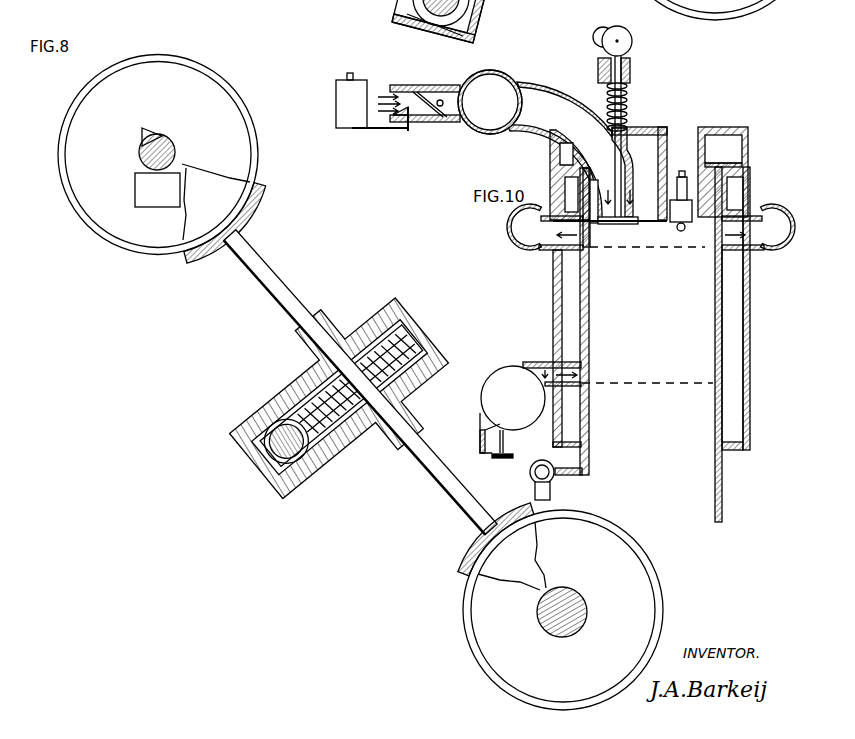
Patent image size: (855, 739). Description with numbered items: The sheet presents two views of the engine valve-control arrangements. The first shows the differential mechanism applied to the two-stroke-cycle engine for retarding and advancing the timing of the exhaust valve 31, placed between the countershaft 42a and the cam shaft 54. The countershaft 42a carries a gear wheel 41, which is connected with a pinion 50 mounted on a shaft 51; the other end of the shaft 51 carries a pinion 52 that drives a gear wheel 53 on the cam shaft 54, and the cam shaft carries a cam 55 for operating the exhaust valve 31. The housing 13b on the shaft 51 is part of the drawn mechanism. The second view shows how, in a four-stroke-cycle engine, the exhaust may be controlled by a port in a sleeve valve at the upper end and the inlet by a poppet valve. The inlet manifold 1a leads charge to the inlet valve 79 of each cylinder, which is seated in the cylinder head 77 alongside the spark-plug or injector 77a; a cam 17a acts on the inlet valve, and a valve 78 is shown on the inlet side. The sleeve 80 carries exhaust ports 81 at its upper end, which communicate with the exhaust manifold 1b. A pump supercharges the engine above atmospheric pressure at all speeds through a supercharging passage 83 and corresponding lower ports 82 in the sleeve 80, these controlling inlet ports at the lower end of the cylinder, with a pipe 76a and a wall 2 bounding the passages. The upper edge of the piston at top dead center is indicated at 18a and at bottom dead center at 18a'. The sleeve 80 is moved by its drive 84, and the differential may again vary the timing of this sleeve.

In FIG. 8, the gear wheel 53 is at (252, 118).
In FIG. 8, the cam 55 is at (131, 143).
In FIG. 8, the cam shaft 54 is at (184, 156).
In FIG. 8, the exhaust valve 31 is at (134, 190).
In FIG. 8, the pinion 52 is at (246, 220).
In FIG. 8, the shaft 51 is at (288, 275).
In FIG. 8, the spring housing 13b is at (347, 397).
In FIG. 10, the spring housing 13b is at (477, 40).
In FIG. 8, the pinion 50 is at (469, 554).
In FIG. 8, the gear wheel 41 is at (612, 528).
In FIG. 8, the countershaft 42a is at (596, 610).
In FIG. 10, the inlet valve 78 is at (414, 130).
In FIG. 10, the inlet manifold 1a is at (535, 145).
In FIG. 10, the inlet valve 79 is at (595, 56).
In FIG. 10, the cam 17a is at (634, 47).
In FIG. 10, the cylinder head 77 is at (729, 125).
In FIG. 10, the spark-plug or injector 77a is at (690, 179).
In FIG. 10, the exhaust ports 81 is at (740, 177).
In FIG. 10, the exhaust manifold 1b is at (651, 227).
In FIG. 10, the upper edge of piston in top dead center position 18a is at (647, 257).
In FIG. 10, the pipe wall 2 is at (549, 273).
In FIG. 10, the sleeve 80 is at (595, 294).
In FIG. 10, the pipe 76a is at (752, 290).
In FIG. 10, the supercharging passage 83 is at (548, 366).
In FIG. 10, the lower ports 82 is at (584, 397).
In FIG. 10, the bottom dead center of piston upper edge 18a' is at (647, 373).
In FIG. 10, the drive of sleeve 84 is at (557, 493).